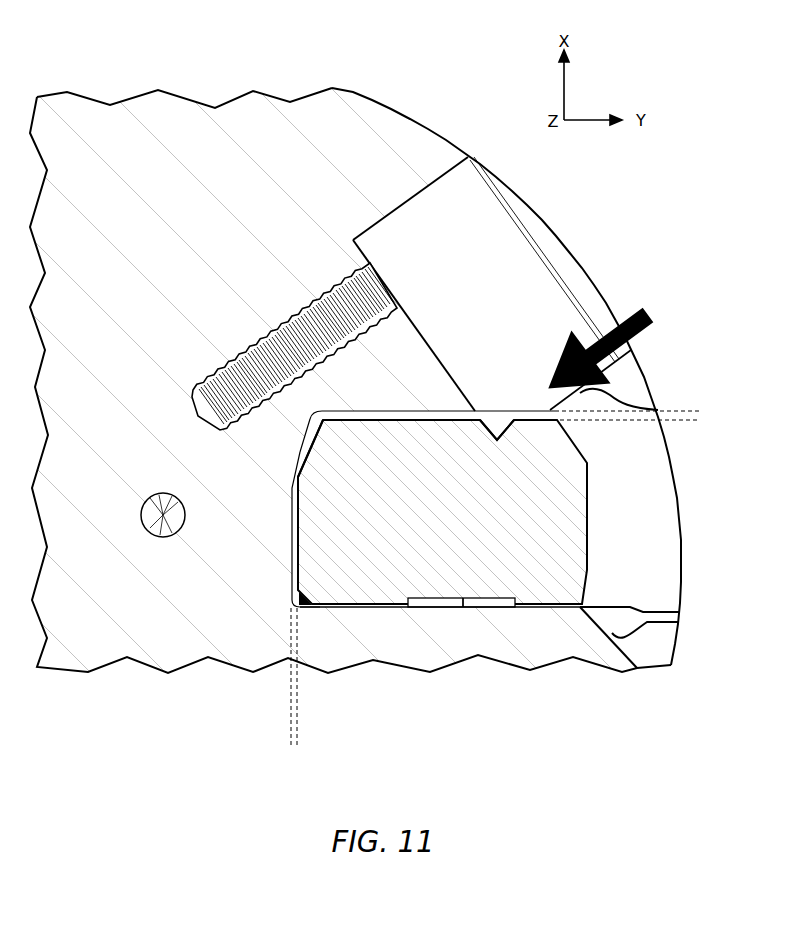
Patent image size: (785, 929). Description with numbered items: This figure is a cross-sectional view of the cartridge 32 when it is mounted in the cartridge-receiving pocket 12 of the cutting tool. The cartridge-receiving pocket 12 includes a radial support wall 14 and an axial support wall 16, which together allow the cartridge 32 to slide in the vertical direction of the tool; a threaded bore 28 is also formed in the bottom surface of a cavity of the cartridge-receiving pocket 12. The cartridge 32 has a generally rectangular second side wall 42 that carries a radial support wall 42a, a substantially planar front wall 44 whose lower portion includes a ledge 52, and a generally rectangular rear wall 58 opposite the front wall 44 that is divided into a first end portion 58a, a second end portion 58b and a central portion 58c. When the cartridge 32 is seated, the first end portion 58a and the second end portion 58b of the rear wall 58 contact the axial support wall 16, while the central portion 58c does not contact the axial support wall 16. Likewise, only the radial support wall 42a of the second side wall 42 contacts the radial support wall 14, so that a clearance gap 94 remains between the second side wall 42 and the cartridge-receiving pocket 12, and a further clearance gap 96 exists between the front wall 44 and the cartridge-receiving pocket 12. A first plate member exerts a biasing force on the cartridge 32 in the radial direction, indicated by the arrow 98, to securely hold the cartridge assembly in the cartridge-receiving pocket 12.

The cartridge-receiving pocket 12 is at (613, 548).
The radial support wall 14 is at (318, 447).
The axial support wall 16 is at (442, 600).
The threaded bore 28 is at (324, 286).
The cartridge 32 is at (590, 505).
The second side wall 42 is at (294, 524).
The radial support wall 42a is at (292, 465).
The front wall 44 is at (390, 413).
The ledge 52 is at (496, 436).
The rear wall 58 is at (445, 609).
The first end portion 58a is at (357, 609).
The second end portion 58b is at (539, 609).
The central portion 58c is at (464, 609).
The clearance gap 94 is at (325, 737).
The clearance gap 96 is at (693, 450).
The arrow 98 is at (632, 310).